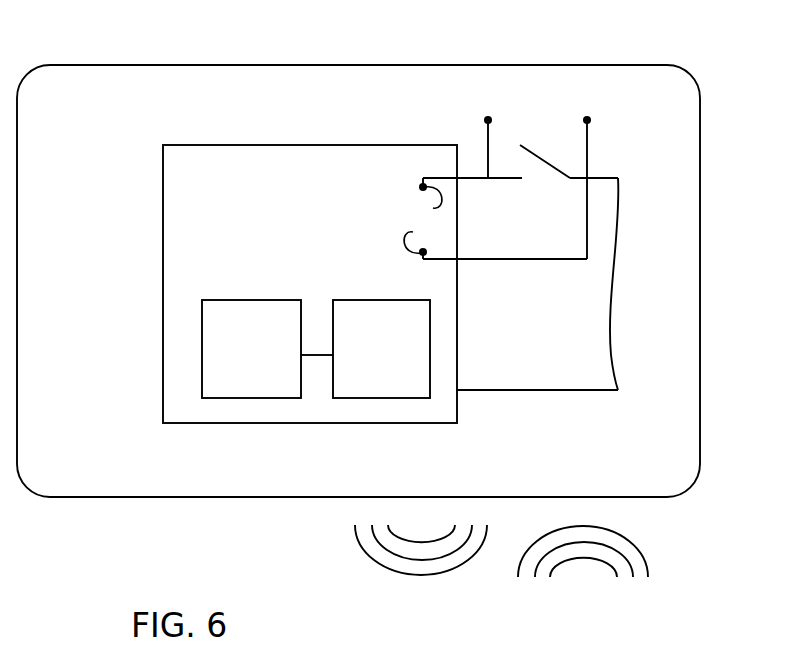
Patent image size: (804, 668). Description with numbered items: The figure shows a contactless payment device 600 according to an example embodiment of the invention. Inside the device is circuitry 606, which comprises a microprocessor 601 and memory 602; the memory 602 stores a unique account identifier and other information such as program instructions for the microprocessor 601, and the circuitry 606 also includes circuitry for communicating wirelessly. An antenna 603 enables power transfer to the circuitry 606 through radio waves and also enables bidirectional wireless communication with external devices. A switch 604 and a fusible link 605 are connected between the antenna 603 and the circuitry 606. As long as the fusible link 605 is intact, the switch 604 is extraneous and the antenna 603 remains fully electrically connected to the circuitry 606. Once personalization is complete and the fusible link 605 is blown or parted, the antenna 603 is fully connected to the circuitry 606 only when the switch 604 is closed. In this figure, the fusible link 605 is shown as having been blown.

The contactless payment device 600 is at (653, 65).
The microprocessor 601 is at (245, 398).
The memory 602 is at (373, 398).
The antenna 603 is at (620, 194).
The switch 604 is at (533, 142).
The fusible link 605 is at (417, 220).
The circuitry 606 is at (250, 145).